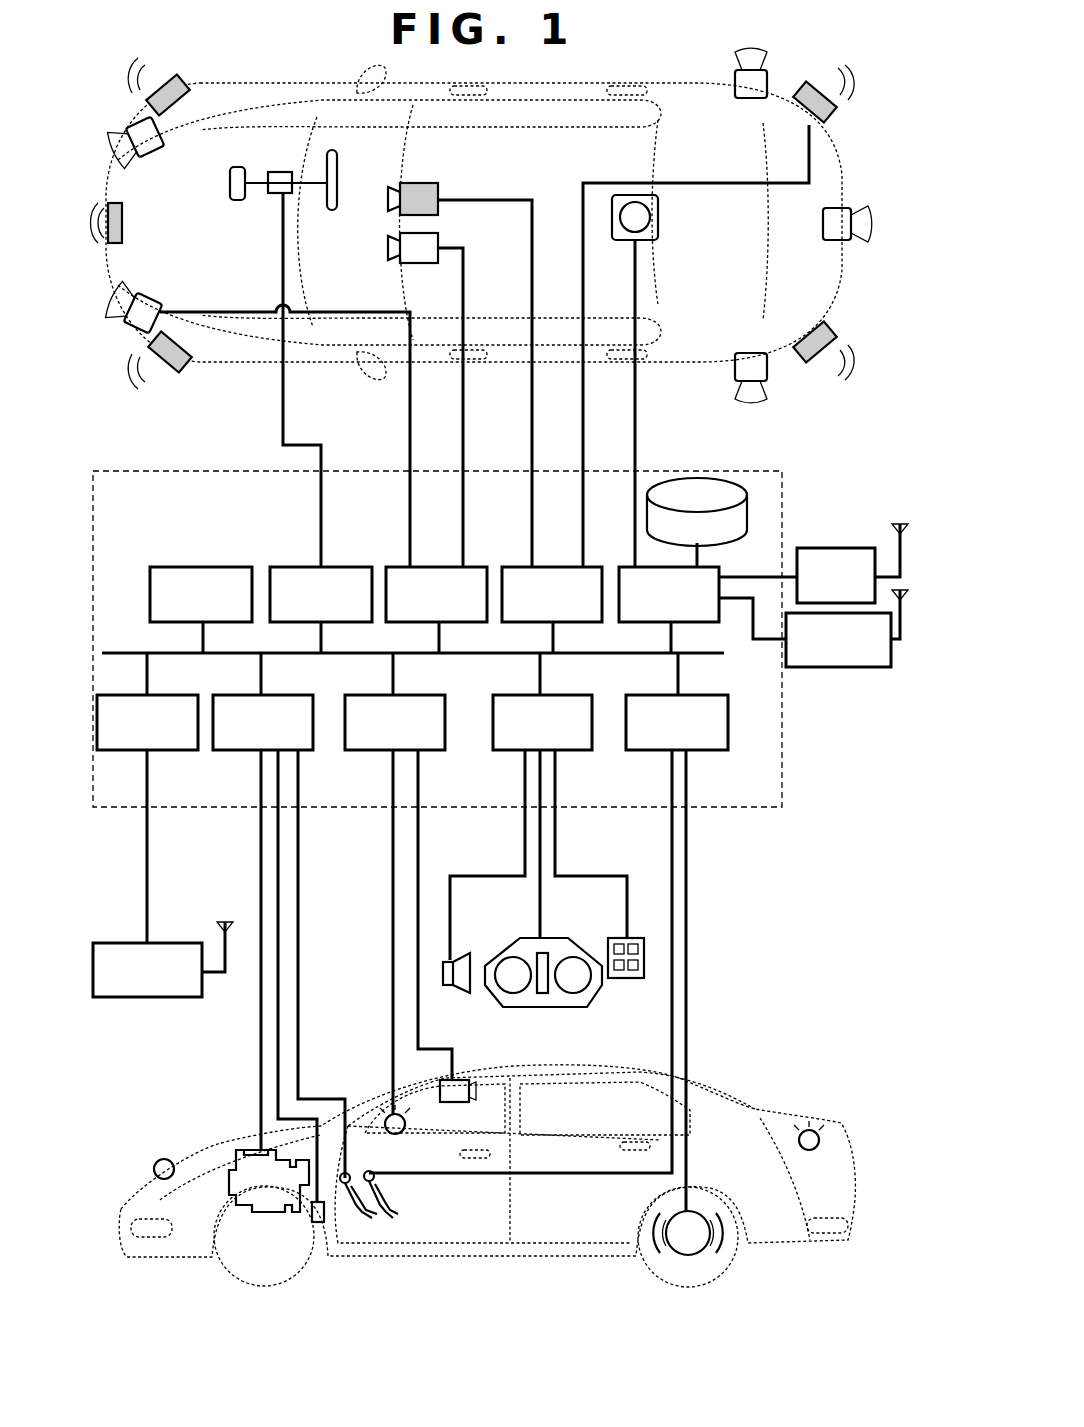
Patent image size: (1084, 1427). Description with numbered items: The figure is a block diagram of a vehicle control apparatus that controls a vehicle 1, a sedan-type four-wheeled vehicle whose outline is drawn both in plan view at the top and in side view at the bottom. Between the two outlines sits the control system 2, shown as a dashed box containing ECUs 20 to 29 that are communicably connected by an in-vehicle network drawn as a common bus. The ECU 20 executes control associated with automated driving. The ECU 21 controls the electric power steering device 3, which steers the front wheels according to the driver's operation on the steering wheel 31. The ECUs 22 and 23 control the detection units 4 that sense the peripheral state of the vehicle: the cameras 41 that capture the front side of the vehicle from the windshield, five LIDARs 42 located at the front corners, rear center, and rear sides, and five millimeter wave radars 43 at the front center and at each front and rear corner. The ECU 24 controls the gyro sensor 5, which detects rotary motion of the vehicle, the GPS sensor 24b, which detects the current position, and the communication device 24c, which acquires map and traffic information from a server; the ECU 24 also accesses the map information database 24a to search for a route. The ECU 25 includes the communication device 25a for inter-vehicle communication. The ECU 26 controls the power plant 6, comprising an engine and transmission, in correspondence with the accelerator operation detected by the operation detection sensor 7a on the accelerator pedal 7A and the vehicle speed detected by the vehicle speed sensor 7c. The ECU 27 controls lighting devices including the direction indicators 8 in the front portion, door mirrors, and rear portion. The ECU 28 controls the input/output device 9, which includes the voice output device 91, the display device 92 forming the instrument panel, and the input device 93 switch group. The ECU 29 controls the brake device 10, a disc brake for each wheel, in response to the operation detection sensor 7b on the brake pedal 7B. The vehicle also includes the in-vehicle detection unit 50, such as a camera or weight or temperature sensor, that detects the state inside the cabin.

The vehicle 1 is at (851, 139).
The control system 2 is at (760, 808).
The electric power steering device 3 is at (238, 203).
The detection units 4 is at (134, 93).
The gyro sensor 5 is at (660, 215).
The power plant 6 is at (238, 1157).
The operation detection sensor 7a is at (348, 1174).
The operation detection sensor 7b is at (374, 1171).
The accelerator pedal 7A is at (376, 1219).
The brake pedal 7B is at (393, 1199).
The vehicle speed sensor 7c is at (319, 1225).
The direction indicators 8 is at (153, 1168).
The input/output device 9 is at (543, 993).
The brake device 10 is at (693, 1257).
The ECU 20 is at (233, 565).
The ECU 21 is at (350, 565).
The ECU 22 is at (440, 565).
The ECU 23 is at (560, 565).
The ECU 24 is at (620, 565).
The map information database 24a is at (697, 477).
The GPS sensor 24b is at (852, 547).
The communication device 24c is at (838, 668).
The ECU 25 is at (175, 752).
The communication device 25a is at (150, 998).
The ECU 26 is at (240, 752).
The ECU 27 is at (365, 752).
The ECU 28 is at (580, 752).
The ECU 29 is at (712, 752).
The steering wheel 31 is at (331, 213).
The camera 41 is at (442, 215).
The LIDAR 42 is at (160, 155).
The millimeter wave radar 43 is at (185, 85).
The in-vehicle detection unit 50 is at (462, 1104).
The voice output device 91 is at (452, 987).
The display device 92 is at (505, 950).
The input device 93 is at (624, 979).